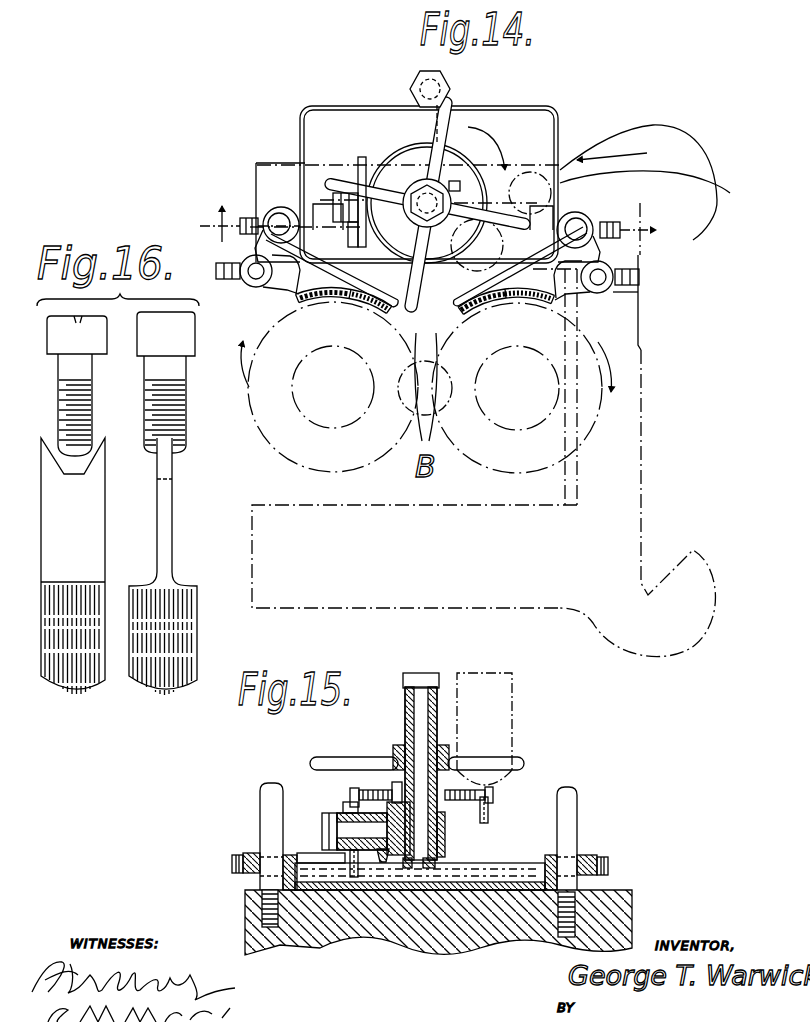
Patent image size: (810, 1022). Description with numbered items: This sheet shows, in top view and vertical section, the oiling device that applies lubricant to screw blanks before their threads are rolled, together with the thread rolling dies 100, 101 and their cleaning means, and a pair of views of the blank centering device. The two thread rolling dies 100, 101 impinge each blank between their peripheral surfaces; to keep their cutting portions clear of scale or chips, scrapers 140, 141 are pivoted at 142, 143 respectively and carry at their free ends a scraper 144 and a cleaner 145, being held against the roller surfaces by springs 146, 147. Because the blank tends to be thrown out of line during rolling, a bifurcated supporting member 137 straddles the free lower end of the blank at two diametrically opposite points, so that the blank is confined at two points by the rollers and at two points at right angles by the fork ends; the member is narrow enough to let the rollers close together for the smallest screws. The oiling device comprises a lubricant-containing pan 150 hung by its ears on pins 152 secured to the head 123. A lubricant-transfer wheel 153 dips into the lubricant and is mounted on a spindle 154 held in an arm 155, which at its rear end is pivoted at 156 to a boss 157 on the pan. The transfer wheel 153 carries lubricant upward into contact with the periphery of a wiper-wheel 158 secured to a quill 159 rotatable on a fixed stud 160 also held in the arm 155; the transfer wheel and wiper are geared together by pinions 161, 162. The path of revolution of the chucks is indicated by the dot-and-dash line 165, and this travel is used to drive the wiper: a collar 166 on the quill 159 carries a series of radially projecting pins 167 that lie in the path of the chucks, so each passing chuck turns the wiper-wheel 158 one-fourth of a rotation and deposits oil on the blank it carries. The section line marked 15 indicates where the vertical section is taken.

In FIG. 14, the section line 15 is at (433, 227).
In FIG. 14, the thread rolling die 100 is at (329, 387).
In FIG. 14, the thread rolling die 101 is at (521, 388).
In FIG. 15, the head 123 is at (608, 893).
In FIG. 16, the bifurcated supporting member 137 is at (186, 512).
In FIG. 14, the scraper 140 is at (287, 275).
In FIG. 14, the scraper 141 is at (577, 297).
In FIG. 14, the pivot 142 is at (251, 276).
In FIG. 14, the pivot 143 is at (633, 292).
In FIG. 14, the scraper 144 is at (327, 301).
In FIG. 14, the cleaner 145 is at (370, 302).
In FIG. 14, the spring 146 is at (296, 212).
In FIG. 14, the spring 147 is at (572, 214).
In FIG. 14, the lubricant-containing pan 150 is at (535, 108).
In FIG. 15, the lubricant-containing pan 150 is at (473, 891).
In FIG. 14, the pin 152 is at (262, 214).
In FIG. 15, the pin 152 is at (262, 809).
In FIG. 14, the lubricant-transfer wheel 153 is at (362, 158).
In FIG. 15, the lubricant-transfer wheel 153 is at (355, 878).
In FIG. 15, the spindle 154 is at (343, 827).
In FIG. 15, the arm 155 is at (440, 840).
In FIG. 14, the pivot 156 is at (447, 84).
In FIG. 14, the boss 157 is at (413, 82).
In FIG. 15, the boss 157 is at (584, 858).
In FIG. 14, the wiper-wheel 158 is at (452, 268).
In FIG. 15, the wiper-wheel 158 is at (492, 800).
In FIG. 15, the quill 159 is at (440, 706).
In FIG. 14, the fixed stud 160 is at (427, 222).
In FIG. 15, the fixed stud 160 is at (473, 729).
In FIG. 15, the pinion 161 is at (386, 864).
In FIG. 15, the pinion 162 is at (488, 823).
In FIG. 14, the dot-and-dash line 165 is at (728, 200).
In FIG. 15, the collar 166 is at (452, 749).
In FIG. 14, the pin 167 is at (455, 215).
In FIG. 15, the pin 167 is at (312, 762).